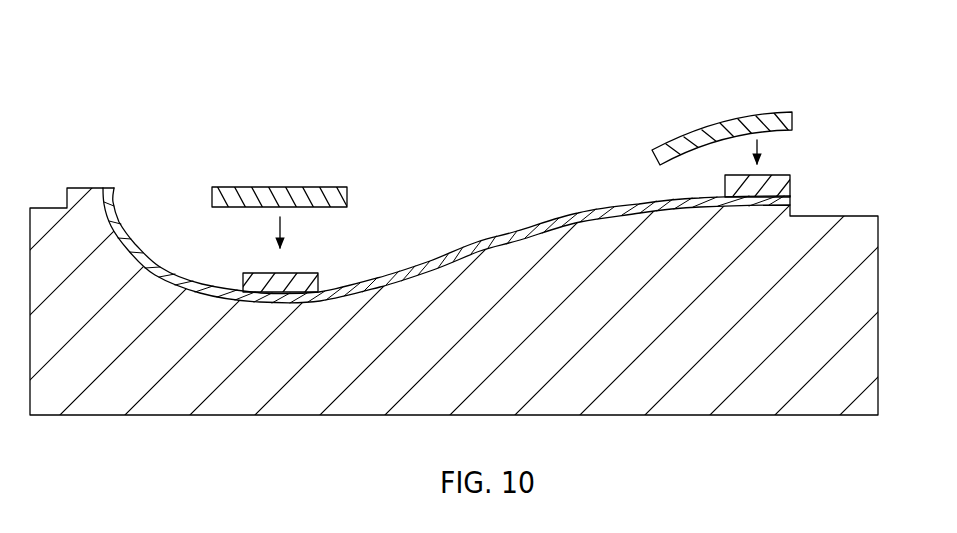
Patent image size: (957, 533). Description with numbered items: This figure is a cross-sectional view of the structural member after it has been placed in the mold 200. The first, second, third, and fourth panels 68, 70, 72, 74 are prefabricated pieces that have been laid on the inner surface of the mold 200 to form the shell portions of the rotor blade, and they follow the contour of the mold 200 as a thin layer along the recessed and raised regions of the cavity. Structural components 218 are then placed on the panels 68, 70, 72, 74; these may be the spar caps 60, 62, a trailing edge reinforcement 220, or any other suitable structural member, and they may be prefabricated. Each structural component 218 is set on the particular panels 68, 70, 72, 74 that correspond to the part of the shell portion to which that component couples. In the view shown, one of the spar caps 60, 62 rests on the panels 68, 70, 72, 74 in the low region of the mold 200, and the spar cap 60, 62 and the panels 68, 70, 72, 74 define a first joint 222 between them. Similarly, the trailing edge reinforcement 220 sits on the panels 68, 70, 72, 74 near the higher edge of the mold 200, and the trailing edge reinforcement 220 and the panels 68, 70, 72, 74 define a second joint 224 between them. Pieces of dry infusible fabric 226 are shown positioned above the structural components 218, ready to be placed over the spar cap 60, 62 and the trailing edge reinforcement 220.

The mold 200 is at (672, 397).
The structural component 218 is at (446, 193).
The trailing edge reinforcement 220 is at (781, 175).
The first joint 222 is at (218, 273).
The second joint 224 is at (806, 185).
The dry infusible fabric 226 is at (270, 186).
The spar cap 60 is at (325, 224).
The spar cap 62 is at (308, 282).
The first panel 68 is at (446, 193).
The second panel 70 is at (446, 193).
The third panel 72 is at (446, 193).
The fourth panel 74 is at (537, 236).